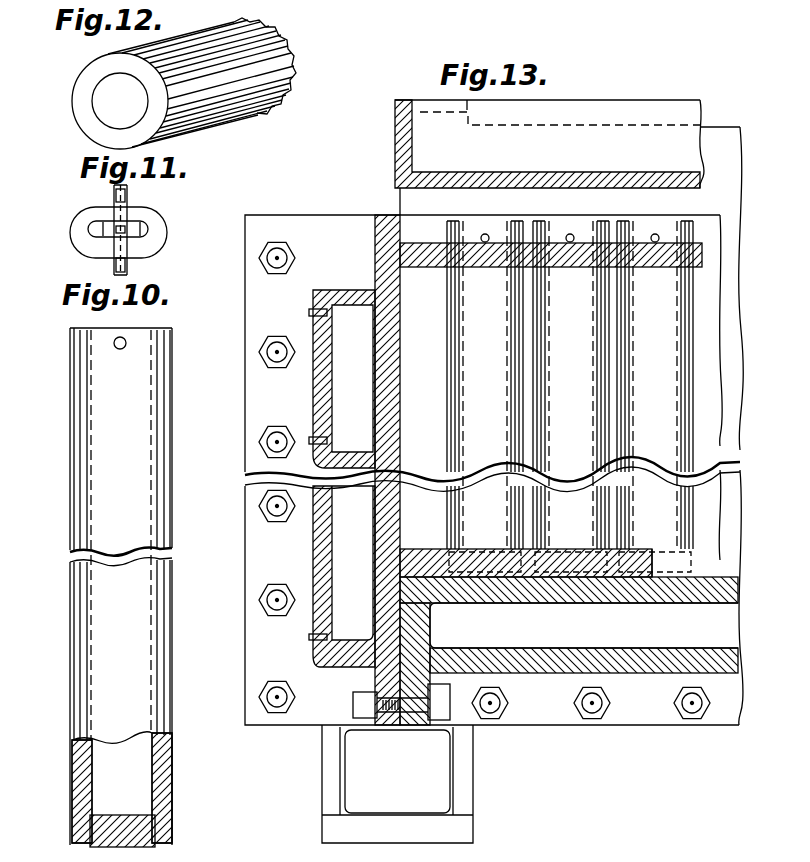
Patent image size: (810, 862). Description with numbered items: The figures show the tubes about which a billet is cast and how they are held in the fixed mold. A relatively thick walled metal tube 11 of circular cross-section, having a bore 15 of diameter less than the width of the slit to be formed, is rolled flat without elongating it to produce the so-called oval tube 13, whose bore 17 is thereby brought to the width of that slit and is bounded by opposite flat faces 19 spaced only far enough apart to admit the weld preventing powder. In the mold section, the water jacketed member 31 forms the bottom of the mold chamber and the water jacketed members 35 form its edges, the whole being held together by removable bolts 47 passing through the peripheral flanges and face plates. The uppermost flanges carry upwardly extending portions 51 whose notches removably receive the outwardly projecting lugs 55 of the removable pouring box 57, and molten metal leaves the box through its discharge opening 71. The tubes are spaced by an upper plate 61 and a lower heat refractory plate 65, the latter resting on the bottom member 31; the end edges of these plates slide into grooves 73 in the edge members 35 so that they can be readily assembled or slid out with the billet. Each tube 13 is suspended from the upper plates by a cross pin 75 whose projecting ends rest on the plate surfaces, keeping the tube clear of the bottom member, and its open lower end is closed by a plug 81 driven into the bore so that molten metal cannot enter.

In FIG. 12, the circular tube 11 is at (68, 103).
In FIG. 12, the bore 15 is at (106, 78).
In FIG. 11, the oval tube 13 is at (66, 241).
In FIG. 10, the oval tube 13 is at (66, 427).
In FIG. 13, the oval tube 13 is at (470, 398).
In FIG. 11, the bore 17 is at (141, 230).
In FIG. 10, the bore 17 is at (93, 779).
In FIG. 11, the flat faces 19 is at (103, 220).
In FIG. 11, the cross pin 75 is at (129, 194).
In FIG. 10, the cross pin 75 is at (120, 349).
In FIG. 13, the cross pin 75 is at (568, 235).
In FIG. 10, the plug 81 is at (142, 828).
In FIG. 13, the plug 81 is at (667, 578).
In FIG. 13, the water jacketed member 31 is at (563, 673).
In FIG. 13, the water jacketed members 35 is at (318, 395).
In FIG. 13, the bolts 47 is at (277, 336).
In FIG. 13, the upwardly extending portions 51 is at (438, 112).
In FIG. 13, the lugs 55 is at (578, 109).
In FIG. 13, the pouring box 57 is at (395, 148).
In FIG. 13, the plate 61 is at (658, 268).
In FIG. 13, the plate 65 is at (643, 548).
In FIG. 13, the discharge opening 71 is at (445, 181).
In FIG. 13, the grooves 73 is at (395, 255).